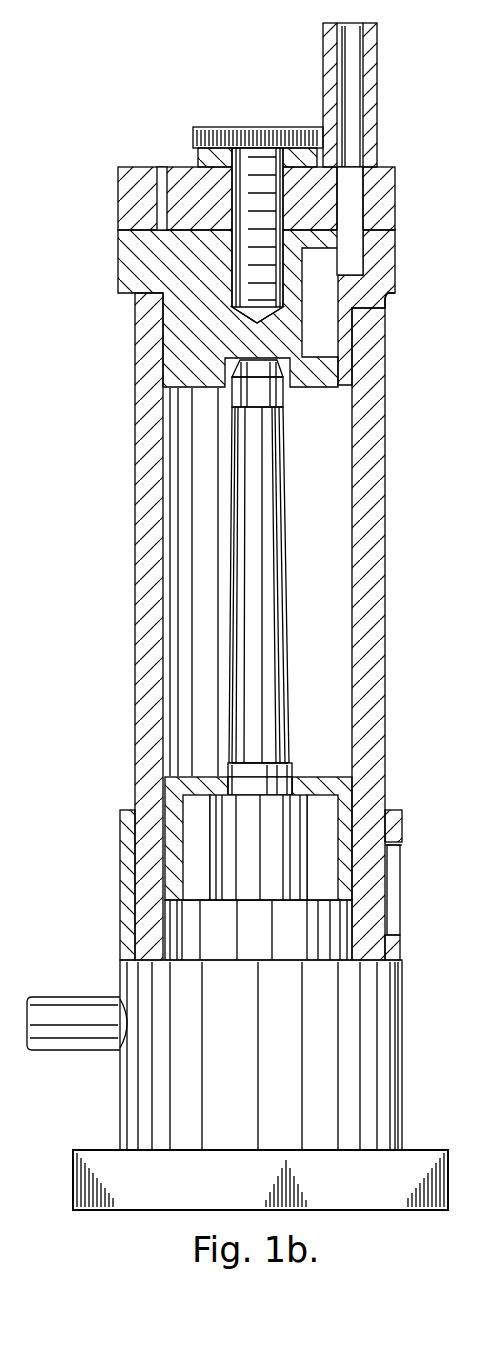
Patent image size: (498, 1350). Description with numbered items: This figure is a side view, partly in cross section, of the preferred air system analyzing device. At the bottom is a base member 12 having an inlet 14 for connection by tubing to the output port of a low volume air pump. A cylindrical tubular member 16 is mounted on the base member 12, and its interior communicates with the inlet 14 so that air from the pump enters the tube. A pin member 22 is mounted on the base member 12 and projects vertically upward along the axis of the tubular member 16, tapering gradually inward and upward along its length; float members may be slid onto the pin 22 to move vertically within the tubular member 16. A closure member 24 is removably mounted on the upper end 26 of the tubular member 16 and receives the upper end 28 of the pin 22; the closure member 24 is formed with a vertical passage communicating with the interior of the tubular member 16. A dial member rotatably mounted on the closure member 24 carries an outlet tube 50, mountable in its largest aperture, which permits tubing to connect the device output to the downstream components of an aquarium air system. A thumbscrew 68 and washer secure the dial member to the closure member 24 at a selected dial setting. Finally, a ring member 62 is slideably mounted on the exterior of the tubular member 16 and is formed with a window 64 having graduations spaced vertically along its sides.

The base member 12 is at (403, 1012).
The inlet 14 is at (87, 997).
The cylindrical tubular member 16 is at (387, 527).
The pin member 22 is at (292, 626).
The closure member 24 is at (395, 168).
The upper end of the tubular member 26 is at (388, 296).
The upper end of the pin 28 is at (289, 386).
The outlet tube 50 is at (378, 24).
The ring member 62 is at (403, 821).
The window 64 is at (394, 935).
The thumbscrew 68 is at (275, 127).